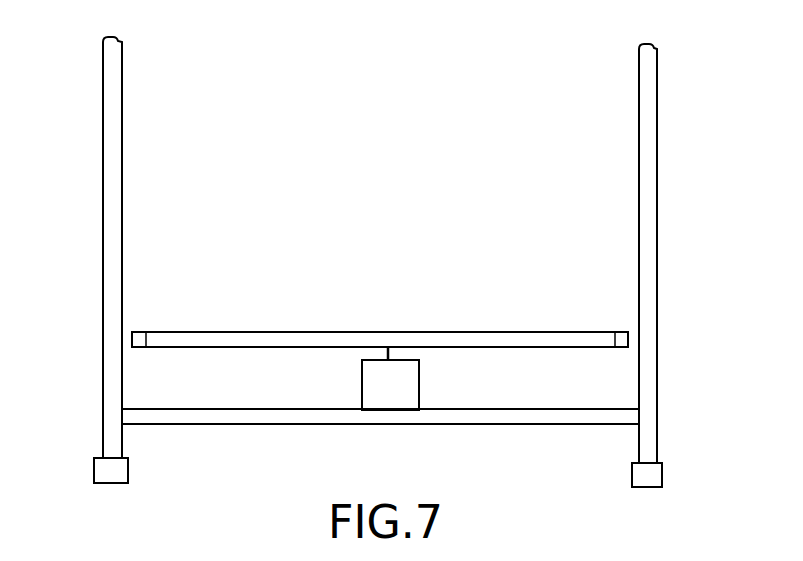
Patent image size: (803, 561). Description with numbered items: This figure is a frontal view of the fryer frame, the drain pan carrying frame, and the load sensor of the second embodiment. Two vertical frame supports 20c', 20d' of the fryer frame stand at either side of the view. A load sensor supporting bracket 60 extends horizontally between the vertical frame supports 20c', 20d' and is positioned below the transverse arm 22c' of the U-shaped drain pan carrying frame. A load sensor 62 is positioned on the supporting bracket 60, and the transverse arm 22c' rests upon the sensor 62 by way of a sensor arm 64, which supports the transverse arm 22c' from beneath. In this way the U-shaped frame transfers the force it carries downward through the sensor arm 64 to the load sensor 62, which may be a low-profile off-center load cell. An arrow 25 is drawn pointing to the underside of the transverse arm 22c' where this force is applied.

The vertical frame support 20d' is at (78, 260).
The vertical frame support 20c' is at (677, 265).
The transverse arm 22c' is at (380, 305).
The load sensor supporting bracket 60 is at (272, 424).
The load sensor 62 is at (419, 385).
The sensor arm 64 is at (388, 351).
The underside of shelf (pointed by arrow) 25 is at (550, 357).